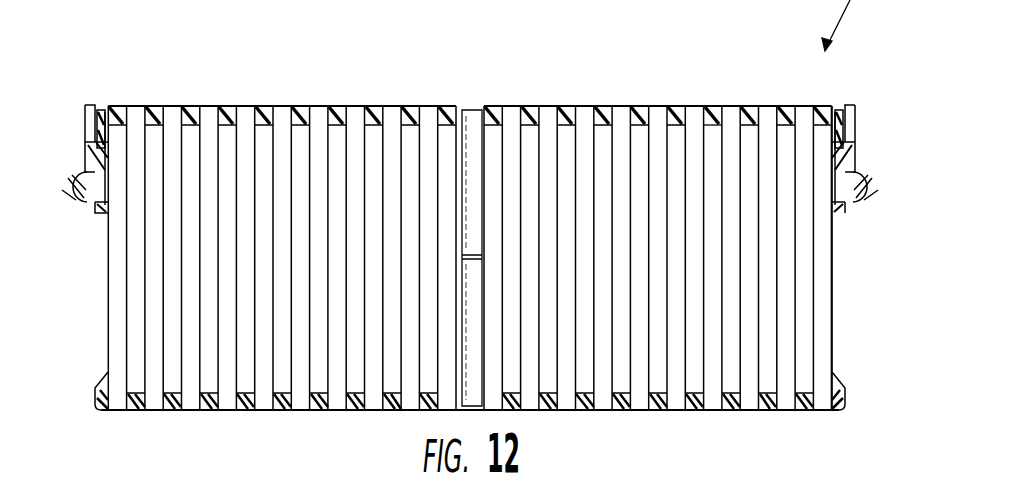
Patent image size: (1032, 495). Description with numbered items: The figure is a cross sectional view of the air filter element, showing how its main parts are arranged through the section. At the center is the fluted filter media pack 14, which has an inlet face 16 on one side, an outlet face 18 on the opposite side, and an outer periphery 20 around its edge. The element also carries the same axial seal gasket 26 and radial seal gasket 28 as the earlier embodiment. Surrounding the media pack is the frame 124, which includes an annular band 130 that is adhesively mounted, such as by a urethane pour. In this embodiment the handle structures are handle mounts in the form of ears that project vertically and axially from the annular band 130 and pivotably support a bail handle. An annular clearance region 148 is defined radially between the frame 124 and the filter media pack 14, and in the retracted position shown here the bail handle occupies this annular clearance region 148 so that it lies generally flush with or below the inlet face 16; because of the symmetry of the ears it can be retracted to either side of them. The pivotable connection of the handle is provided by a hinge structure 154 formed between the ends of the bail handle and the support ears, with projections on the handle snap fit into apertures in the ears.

The fluted filter media pack 14 is at (565, 162).
The inlet face 16 is at (705, 106).
The outlet face 18 is at (727, 411).
The outer periphery 20 is at (833, 298).
The axial seal gasket 26 is at (878, 180).
The radial seal gasket 28 is at (95, 403).
The frame 124 is at (853, 167).
The annular band 130 is at (846, 202).
The annular clearance region 148 is at (103, 102).
The hinge structure 154 is at (78, 132).